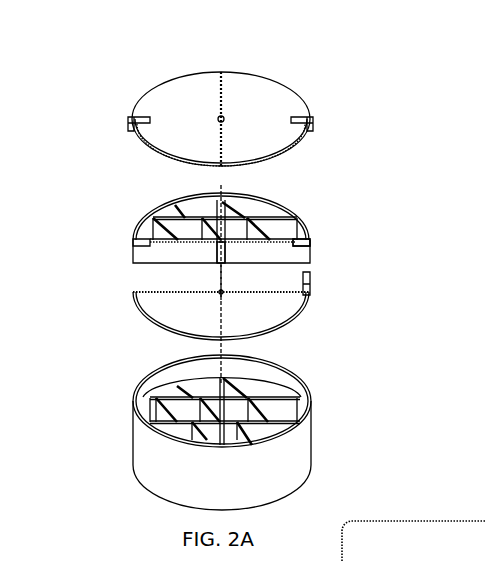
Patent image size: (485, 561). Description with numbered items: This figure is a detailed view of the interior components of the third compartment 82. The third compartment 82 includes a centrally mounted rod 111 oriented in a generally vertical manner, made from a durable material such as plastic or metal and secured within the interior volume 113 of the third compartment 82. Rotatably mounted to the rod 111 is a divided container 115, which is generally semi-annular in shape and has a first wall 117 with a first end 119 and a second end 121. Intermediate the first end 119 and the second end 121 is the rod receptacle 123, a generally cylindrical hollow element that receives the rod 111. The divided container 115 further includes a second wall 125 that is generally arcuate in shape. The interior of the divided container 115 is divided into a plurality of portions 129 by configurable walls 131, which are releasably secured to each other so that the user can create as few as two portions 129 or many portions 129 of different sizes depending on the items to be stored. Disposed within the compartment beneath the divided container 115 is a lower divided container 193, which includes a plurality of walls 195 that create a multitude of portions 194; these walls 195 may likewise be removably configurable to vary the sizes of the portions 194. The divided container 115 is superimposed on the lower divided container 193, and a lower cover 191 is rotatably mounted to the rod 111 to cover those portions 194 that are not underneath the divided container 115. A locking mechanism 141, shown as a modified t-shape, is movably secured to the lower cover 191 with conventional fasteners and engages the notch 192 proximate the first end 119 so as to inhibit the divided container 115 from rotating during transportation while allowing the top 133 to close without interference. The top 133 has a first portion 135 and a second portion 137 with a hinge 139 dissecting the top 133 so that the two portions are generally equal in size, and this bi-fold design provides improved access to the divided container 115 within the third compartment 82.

The third compartment 82 is at (87, 455).
The rod 111 is at (227, 388).
The interior volume 113 is at (258, 385).
The divided container 115 is at (290, 212).
The first wall 117 is at (270, 252).
The first end 119 is at (305, 257).
The second end 121 is at (138, 257).
The rod receptacle 123 is at (246, 222).
The second wall 125 is at (153, 216).
The portions 129 is at (200, 207).
The configurable walls 131 is at (140, 231).
The top 133 is at (265, 93).
The first portion 135 is at (240, 88).
The second portion 137 is at (183, 92).
The hinge 139 is at (222, 72).
The locking mechanism 141 is at (310, 285).
The lower cover 191 is at (163, 310).
The notch 192 is at (298, 240).
The lower divided container 193 is at (257, 420).
The portions 194 is at (183, 408).
The walls 195 is at (183, 388).